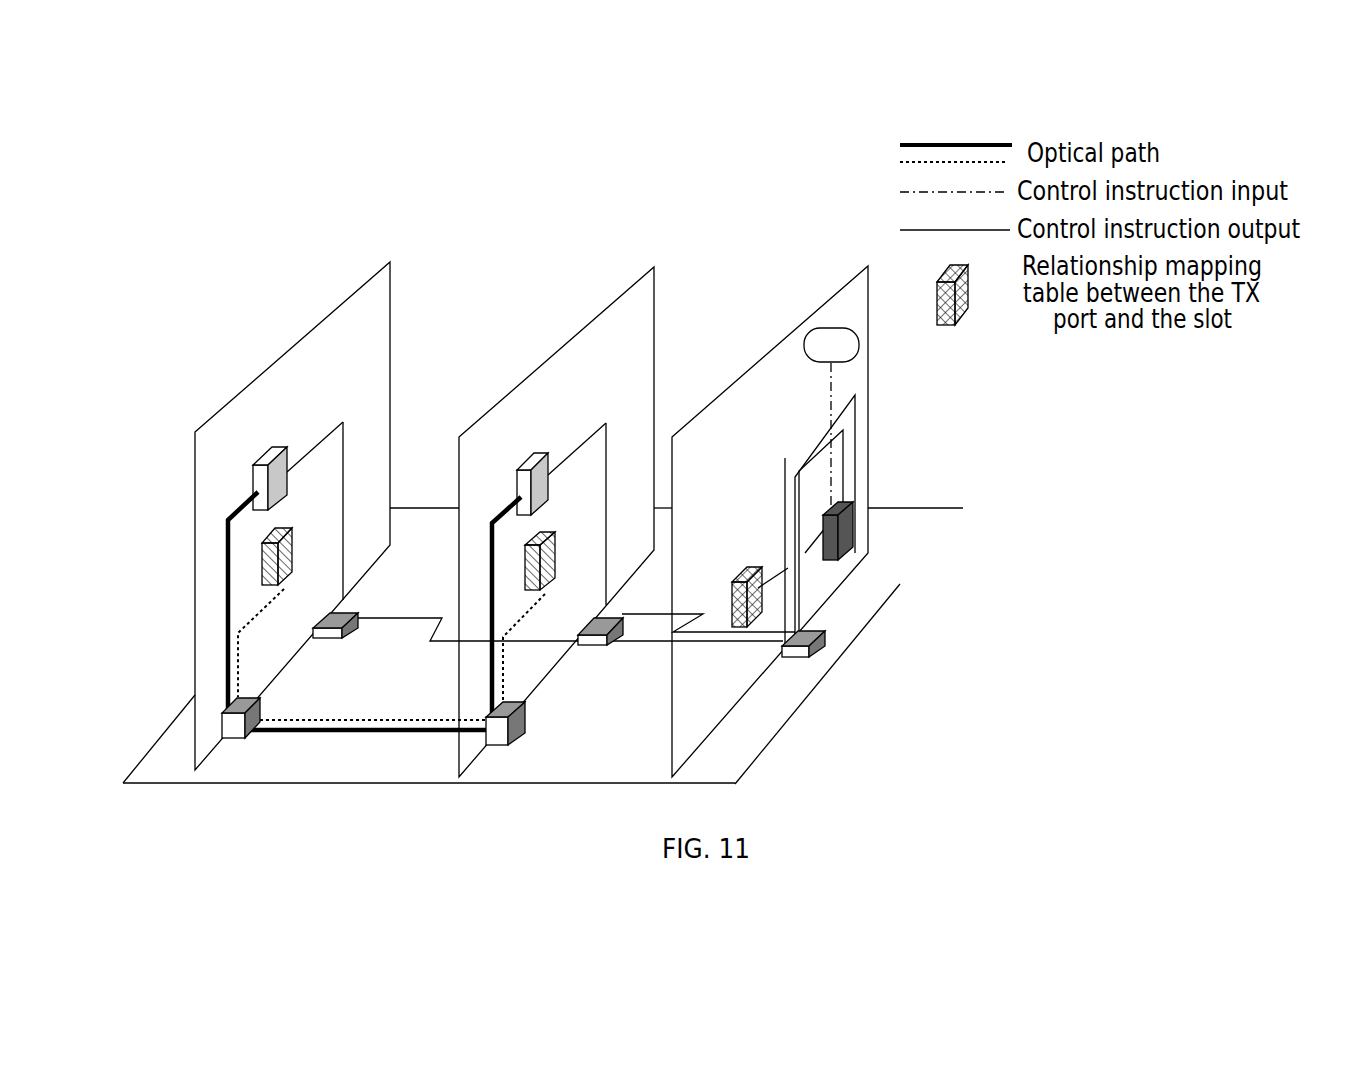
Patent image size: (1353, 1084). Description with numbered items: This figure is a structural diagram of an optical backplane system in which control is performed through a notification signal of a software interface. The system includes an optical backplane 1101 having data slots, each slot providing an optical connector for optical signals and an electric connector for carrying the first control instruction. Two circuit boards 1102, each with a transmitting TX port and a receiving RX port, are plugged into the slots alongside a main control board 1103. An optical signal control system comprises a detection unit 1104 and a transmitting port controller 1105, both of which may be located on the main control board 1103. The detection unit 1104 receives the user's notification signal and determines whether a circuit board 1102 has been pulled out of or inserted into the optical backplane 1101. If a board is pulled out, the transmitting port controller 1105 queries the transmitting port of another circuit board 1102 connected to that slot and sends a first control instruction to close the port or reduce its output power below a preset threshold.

The optical backplane 1101 is at (707, 787).
The circuit board 1102 is at (642, 277).
The main control board 1103 is at (852, 283).
The detection unit 1104 is at (856, 354).
The transmitting port controller 1105 is at (853, 537).